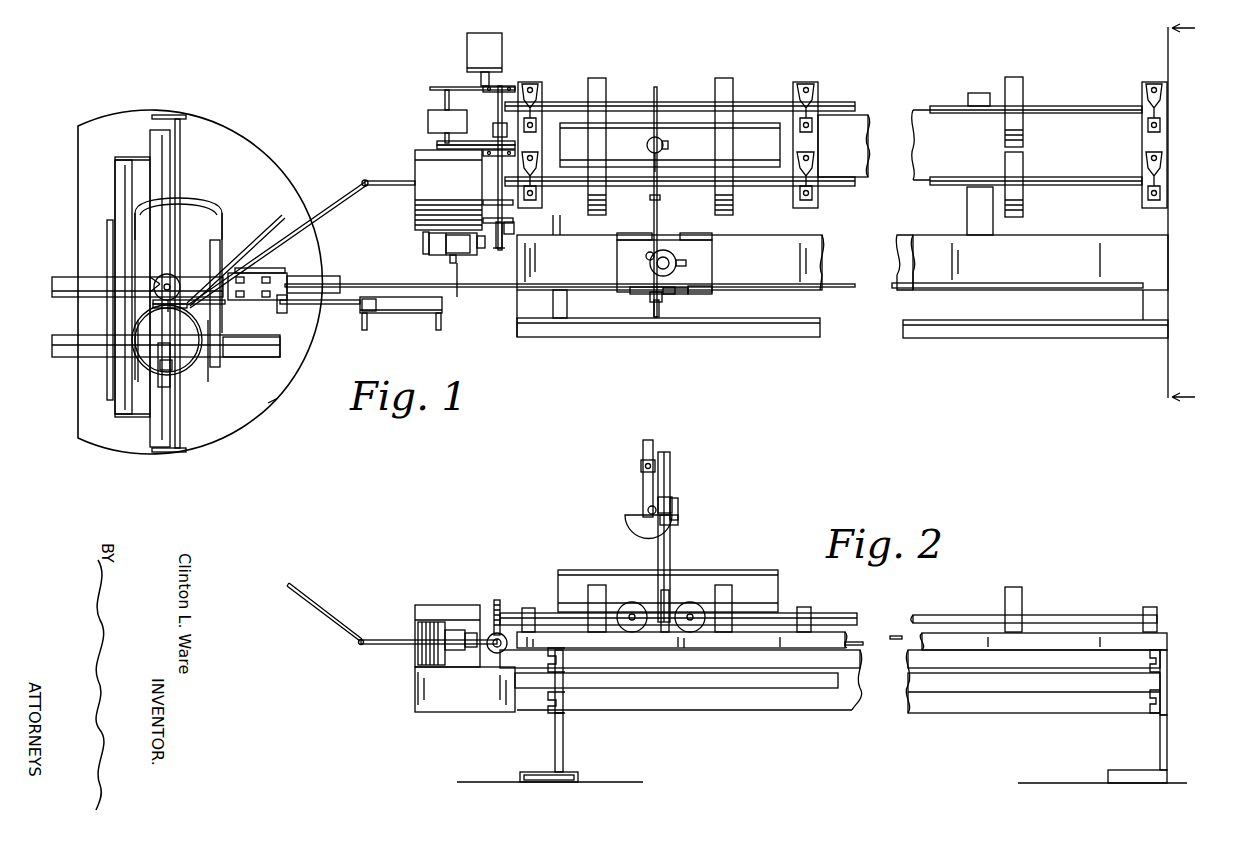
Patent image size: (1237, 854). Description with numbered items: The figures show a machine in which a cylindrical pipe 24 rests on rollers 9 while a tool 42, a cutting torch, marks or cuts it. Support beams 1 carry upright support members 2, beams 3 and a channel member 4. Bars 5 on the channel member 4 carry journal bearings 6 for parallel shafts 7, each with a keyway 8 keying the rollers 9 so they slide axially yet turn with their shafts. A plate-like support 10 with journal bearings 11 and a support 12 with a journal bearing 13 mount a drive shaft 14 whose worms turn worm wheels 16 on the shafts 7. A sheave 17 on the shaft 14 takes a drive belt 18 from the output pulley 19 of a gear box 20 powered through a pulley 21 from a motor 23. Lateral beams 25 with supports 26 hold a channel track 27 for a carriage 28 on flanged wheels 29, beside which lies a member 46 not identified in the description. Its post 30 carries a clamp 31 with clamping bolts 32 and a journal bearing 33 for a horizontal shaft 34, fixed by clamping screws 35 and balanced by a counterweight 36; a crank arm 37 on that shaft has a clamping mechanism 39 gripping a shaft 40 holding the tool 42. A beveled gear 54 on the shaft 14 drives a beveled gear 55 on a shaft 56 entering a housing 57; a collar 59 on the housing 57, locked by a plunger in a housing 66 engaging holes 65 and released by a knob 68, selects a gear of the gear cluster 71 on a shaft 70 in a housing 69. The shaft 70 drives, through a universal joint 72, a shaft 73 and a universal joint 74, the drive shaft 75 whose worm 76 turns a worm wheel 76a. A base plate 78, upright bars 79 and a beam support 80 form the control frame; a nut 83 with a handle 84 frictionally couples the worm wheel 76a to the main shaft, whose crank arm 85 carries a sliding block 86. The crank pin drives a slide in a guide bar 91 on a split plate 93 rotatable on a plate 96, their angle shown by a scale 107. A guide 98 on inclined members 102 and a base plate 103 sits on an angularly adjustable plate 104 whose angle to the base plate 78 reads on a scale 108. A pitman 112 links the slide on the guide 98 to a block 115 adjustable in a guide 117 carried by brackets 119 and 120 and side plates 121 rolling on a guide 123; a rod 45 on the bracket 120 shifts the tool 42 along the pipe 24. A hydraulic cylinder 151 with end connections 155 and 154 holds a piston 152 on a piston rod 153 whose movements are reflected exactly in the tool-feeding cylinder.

In FIG. 2, the base plate 1 is at (578, 776).
In FIG. 2, the standard 2 is at (565, 737).
In FIG. 2, the frame member 3 is at (972, 700).
In FIG. 1, the frame beam 4 is at (872, 176).
In FIG. 2, the frame beam 4 is at (858, 672).
In FIG. 1, the bearing bracket 5 is at (818, 190).
In FIG. 1, the bearing 6 is at (806, 206).
In FIG. 2, the bearing 6 is at (529, 608).
In FIG. 1, the shaft end 7 is at (942, 107).
In FIG. 2, the shaft end 7 is at (940, 616).
In FIG. 1, the shaft 8 is at (1060, 108).
In FIG. 1, the support pillar 9 is at (606, 196).
In FIG. 2, the support pillar 9 is at (598, 585).
In FIG. 1, the bracket 10 is at (512, 235).
In FIG. 1, the section line 11 is at (1194, 217).
In FIG. 1, the drive shaft 12 is at (505, 90).
In FIG. 1, the vertical shaft 13 is at (500, 82).
In FIG. 1, the coupling 14 is at (492, 128).
In FIG. 1, the bearing plate 16 is at (483, 92).
In FIG. 1, the housing 17 is at (560, 140).
In FIG. 1, the plate 18 is at (440, 148).
In FIG. 1, the plate 19 is at (473, 142).
In FIG. 1, the control box 20 is at (432, 114).
In FIG. 1, the post 21 is at (440, 88).
In FIG. 2, the post 21 is at (1160, 735).
In FIG. 1, the motor 23 is at (486, 34).
In FIG. 1, the beam 24 is at (680, 126).
In FIG. 2, the beam 24 is at (730, 572).
In FIG. 1, the support post 25 is at (968, 224).
In FIG. 2, the support post 25 is at (548, 676).
In FIG. 2, the bracket 26 is at (560, 658).
In FIG. 1, the table beam 27 is at (987, 273).
In FIG. 2, the table beam 27 is at (728, 650).
In FIG. 1, the roller 28 is at (706, 298).
In FIG. 2, the roller 28 is at (650, 608).
In FIG. 1, the roller 29 is at (684, 296).
In FIG. 2, the roller 29 is at (690, 603).
In FIG. 1, the carriage 30 is at (660, 248).
In FIG. 2, the carriage 30 is at (674, 530).
In FIG. 1, the arm 31 is at (688, 267).
In FIG. 2, the arm 31 is at (670, 497).
In FIG. 1, the disc 32 is at (677, 263).
In FIG. 2, the disc 32 is at (678, 500).
In FIG. 1, the table 33 is at (620, 272).
In FIG. 1, the bar 34 is at (645, 297).
In FIG. 2, the bar 34 is at (648, 508).
In FIG. 1, the pin 35 is at (646, 255).
In FIG. 1, the hanger 36 is at (678, 302).
In FIG. 2, the hanger 36 is at (638, 518).
In FIG. 1, the collar 37 is at (662, 198).
In FIG. 2, the post 39 is at (644, 460).
In FIG. 1, the clamp 40 is at (660, 172).
In FIG. 2, the clamp 40 is at (642, 470).
In FIG. 1, the rod 42 is at (654, 135).
In FIG. 2, the rod 42 is at (659, 452).
In FIG. 1, the rail 45 is at (833, 290).
In FIG. 2, the rail 45 is at (897, 638).
In FIG. 1, the bracket 46 is at (650, 303).
In FIG. 2, the bracket 46 is at (668, 590).
In FIG. 1, the gear 54 is at (497, 255).
In FIG. 2, the gear 54 is at (494, 653).
In FIG. 1, the shaft 55 is at (497, 232).
In FIG. 2, the shaft 55 is at (490, 615).
In FIG. 1, the bracket 56 is at (493, 244).
In FIG. 1, the base block 57 is at (420, 236).
In FIG. 2, the base block 57 is at (466, 668).
In FIG. 1, the gear box 59 is at (455, 251).
In FIG. 2, the gear box 59 is at (455, 630).
In FIG. 1, the motor 65 is at (420, 257).
In FIG. 1, the fitting 66 is at (458, 263).
In FIG. 1, the lead 68 is at (458, 290).
In FIG. 1, the housing 69 is at (416, 196).
In FIG. 2, the housing 69 is at (416, 612).
In FIG. 1, the rod 70 is at (382, 181).
In FIG. 2, the rod 70 is at (382, 645).
In FIG. 2, the motor 71 is at (418, 628).
In FIG. 1, the joint 72 is at (365, 181).
In FIG. 2, the joint 72 is at (360, 645).
In FIG. 1, the handle 73 is at (314, 213).
In FIG. 2, the handle 73 is at (298, 592).
In FIG. 1, the cross bar 74 is at (227, 305).
In FIG. 1, the plate 75 is at (224, 318).
In FIG. 1, the plate 76 is at (153, 305).
In FIG. 1, the gear 76a is at (165, 275).
In FIG. 1, the wheel rim 78 is at (267, 385).
In FIG. 1, the end cap 79 is at (170, 115).
In FIG. 1, the shaft 80 is at (181, 143).
In FIG. 1, the hub 83 is at (168, 294).
In FIG. 1, the pawl 84 is at (157, 281).
In FIG. 1, the ring 85 is at (137, 328).
In FIG. 1, the hub plate 86 is at (163, 370).
In FIG. 1, the rod 91 is at (278, 355).
In FIG. 1, the block 93 is at (158, 378).
In FIG. 1, the cross bar 96 is at (145, 372).
In FIG. 1, the bar 98 is at (148, 128).
In FIG. 1, the channel 102 is at (140, 157).
In FIG. 1, the channel flange 103 is at (120, 185).
In FIG. 1, the drum 104 is at (203, 221).
In FIG. 1, the drum wall 107 is at (217, 373).
In FIG. 1, the dome 108 is at (188, 200).
In FIG. 1, the rod 112 is at (272, 220).
In FIG. 1, the rim 115 is at (268, 403).
In FIG. 1, the plate 117 is at (219, 361).
In FIG. 1, the bracket 119 is at (242, 273).
In FIG. 1, the collar 120 is at (293, 310).
In FIG. 1, the bracket top 121 is at (287, 269).
In FIG. 1, the bar 123 is at (327, 277).
In FIG. 1, the table 151 is at (412, 313).
In FIG. 1, the block 152 is at (384, 313).
In FIG. 1, the shaft 153 is at (327, 305).
In FIG. 1, the leg 154 is at (438, 330).
In FIG. 1, the leg 155 is at (365, 330).